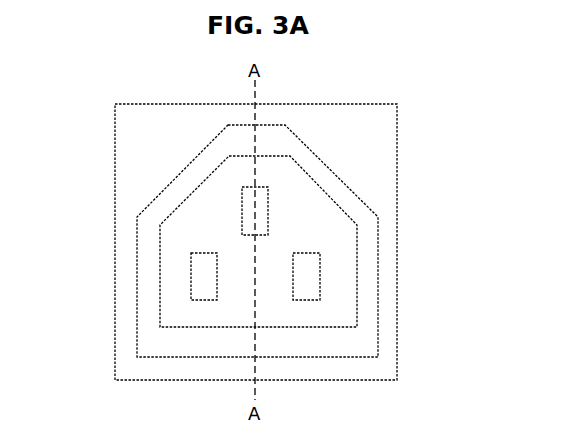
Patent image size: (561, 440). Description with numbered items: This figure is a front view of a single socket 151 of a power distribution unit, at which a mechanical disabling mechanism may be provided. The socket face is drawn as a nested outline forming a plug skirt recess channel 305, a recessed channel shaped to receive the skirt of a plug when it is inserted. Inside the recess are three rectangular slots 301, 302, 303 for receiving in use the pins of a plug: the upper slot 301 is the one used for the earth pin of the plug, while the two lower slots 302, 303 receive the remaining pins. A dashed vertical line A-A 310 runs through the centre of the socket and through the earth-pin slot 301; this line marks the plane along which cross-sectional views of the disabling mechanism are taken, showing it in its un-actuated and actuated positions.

The vertical line A-A 310 is at (255, 92).
The socket 151 is at (180, 173).
The plug skirt recess channel 305 is at (150, 232).
The slot 301 is at (268, 208).
The slot 302 is at (191, 283).
The slot 303 is at (320, 285).